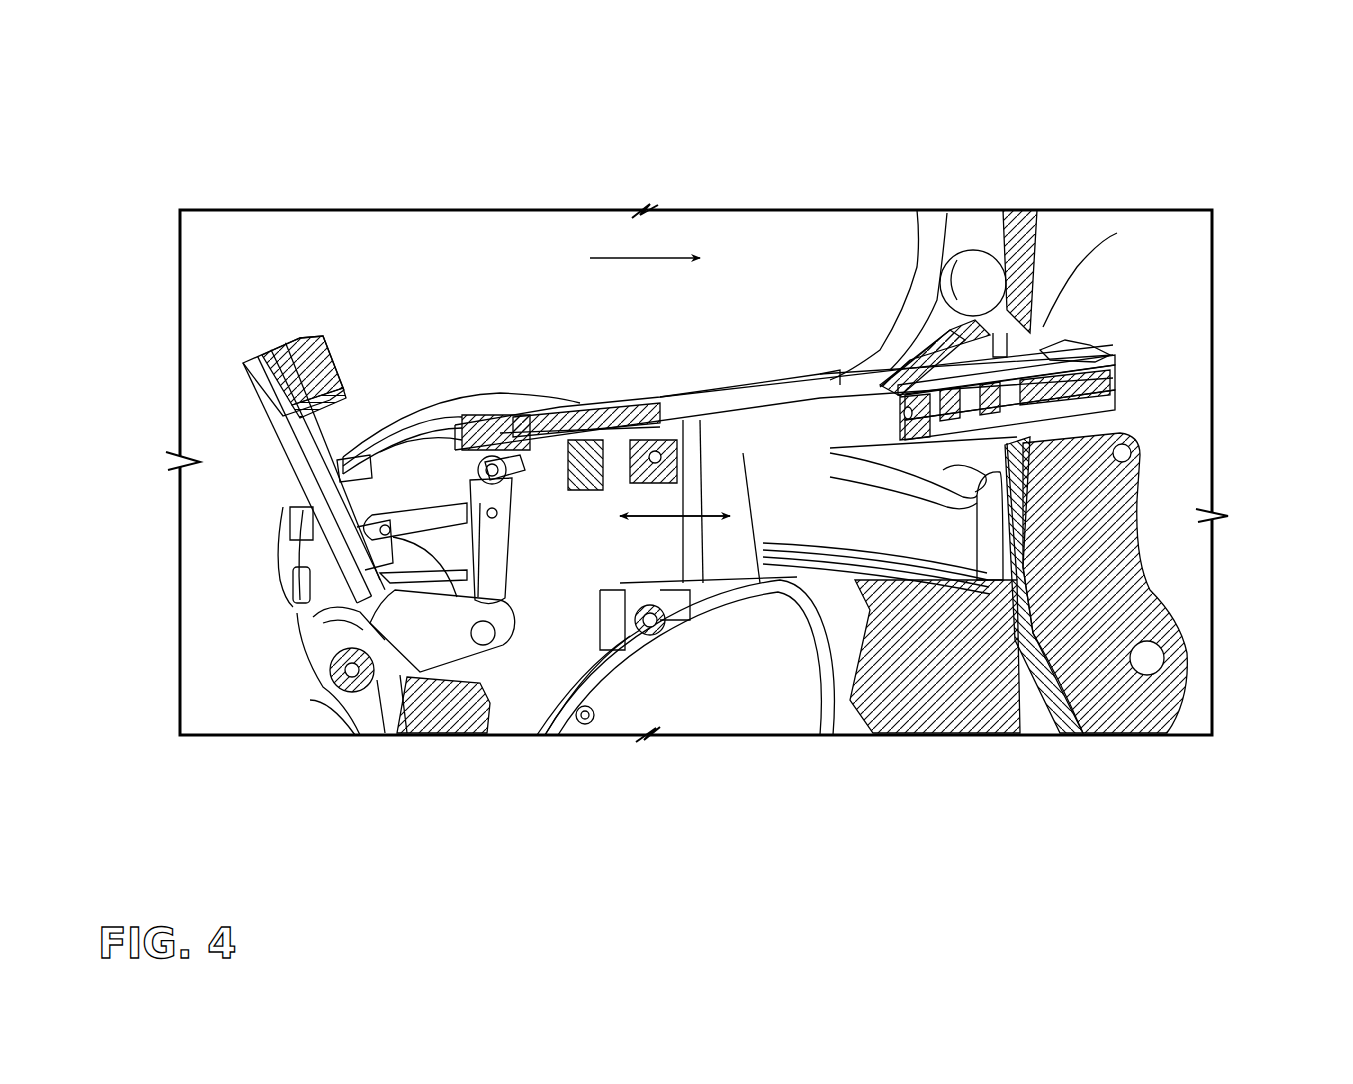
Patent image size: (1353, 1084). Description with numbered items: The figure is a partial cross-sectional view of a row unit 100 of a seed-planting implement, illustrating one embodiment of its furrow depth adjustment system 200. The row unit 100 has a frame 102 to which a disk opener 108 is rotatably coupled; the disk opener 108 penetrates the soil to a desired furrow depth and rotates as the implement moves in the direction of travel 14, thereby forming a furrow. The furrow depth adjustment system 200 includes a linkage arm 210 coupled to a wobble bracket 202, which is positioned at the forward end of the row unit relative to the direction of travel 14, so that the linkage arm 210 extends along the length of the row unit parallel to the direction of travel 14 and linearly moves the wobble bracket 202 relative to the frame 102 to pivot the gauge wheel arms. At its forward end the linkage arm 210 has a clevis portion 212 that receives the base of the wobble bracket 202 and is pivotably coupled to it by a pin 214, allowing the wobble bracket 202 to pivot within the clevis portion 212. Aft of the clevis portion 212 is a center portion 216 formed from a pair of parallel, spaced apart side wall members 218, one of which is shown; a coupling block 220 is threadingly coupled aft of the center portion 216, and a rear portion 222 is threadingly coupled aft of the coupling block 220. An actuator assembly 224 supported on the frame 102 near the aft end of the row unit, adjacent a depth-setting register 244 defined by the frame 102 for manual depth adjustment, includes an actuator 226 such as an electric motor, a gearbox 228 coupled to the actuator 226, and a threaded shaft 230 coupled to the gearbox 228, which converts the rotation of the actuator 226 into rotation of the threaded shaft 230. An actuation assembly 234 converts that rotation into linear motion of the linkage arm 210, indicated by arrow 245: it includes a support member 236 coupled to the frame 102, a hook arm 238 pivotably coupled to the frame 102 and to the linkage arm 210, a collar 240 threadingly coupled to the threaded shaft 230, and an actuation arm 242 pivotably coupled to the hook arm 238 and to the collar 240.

The row unit 100 is at (178, 160).
The direction of travel 14 is at (652, 257).
The frame 102 is at (355, 722).
The disk opener 108 is at (713, 690).
The furrow depth adjustment system 200 is at (1060, 307).
The wobble bracket 202 is at (1117, 382).
The linkage arm 210 is at (730, 375).
The clevis portion 212 is at (1097, 352).
The pin 214 is at (1065, 345).
The center portion 216 is at (820, 455).
The side wall member 218 is at (738, 440).
The coupling block 220 is at (585, 445).
The rear portion 222 is at (520, 450).
The actuator assembly 224 is at (228, 342).
The actuator 226 is at (287, 345).
The gearbox 228 is at (342, 367).
The threaded shaft 230 is at (320, 397).
The actuation assembly 234 is at (440, 498).
The support member 236 is at (435, 722).
The hook arm 238 is at (488, 557).
The collar 240 is at (340, 558).
The actuation arm 242 is at (370, 577).
The depth-setting register 244 is at (407, 432).
The arrow 245 is at (673, 520).